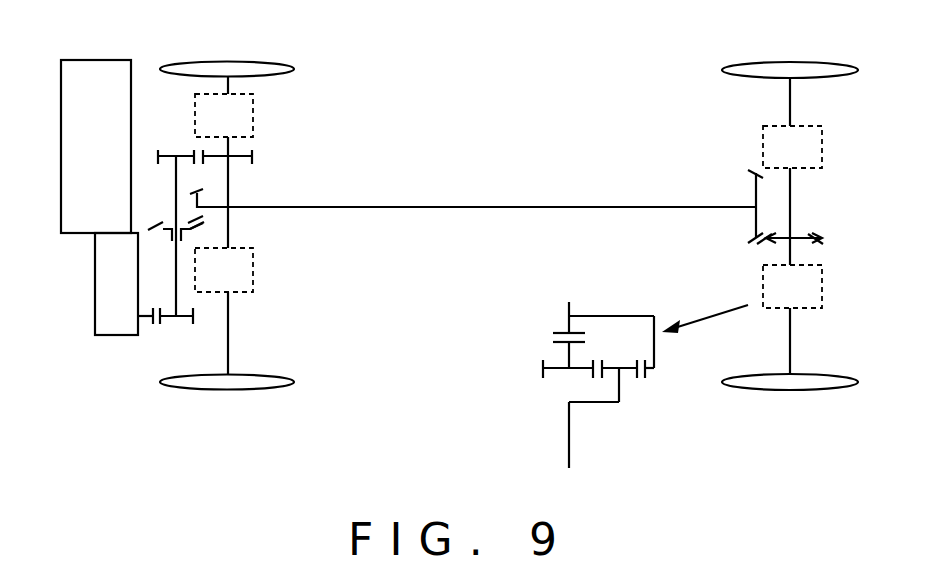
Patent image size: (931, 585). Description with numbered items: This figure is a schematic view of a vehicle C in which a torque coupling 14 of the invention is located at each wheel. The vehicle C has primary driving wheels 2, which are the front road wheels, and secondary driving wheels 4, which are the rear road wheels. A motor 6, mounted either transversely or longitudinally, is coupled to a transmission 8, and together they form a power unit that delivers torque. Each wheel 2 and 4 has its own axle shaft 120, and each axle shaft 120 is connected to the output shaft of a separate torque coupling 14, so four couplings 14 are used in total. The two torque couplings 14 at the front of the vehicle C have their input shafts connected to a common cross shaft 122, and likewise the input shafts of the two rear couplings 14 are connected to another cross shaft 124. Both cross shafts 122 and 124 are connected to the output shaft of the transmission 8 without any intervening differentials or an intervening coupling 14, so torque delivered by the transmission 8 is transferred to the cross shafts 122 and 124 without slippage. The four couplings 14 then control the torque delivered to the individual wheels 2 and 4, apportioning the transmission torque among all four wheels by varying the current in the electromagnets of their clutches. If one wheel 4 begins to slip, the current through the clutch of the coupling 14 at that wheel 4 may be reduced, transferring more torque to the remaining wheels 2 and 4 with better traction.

The primary driving wheels 2 is at (228, 68).
The secondary driving wheels 4 is at (788, 68).
The motor 6 is at (88, 126).
The transmission 8 is at (117, 288).
The torque coupling 14 is at (253, 120).
The axle shaft 120 is at (228, 84).
The cross shaft 122 is at (228, 222).
The cross shaft 124 is at (790, 207).
The vehicle C is at (408, 450).